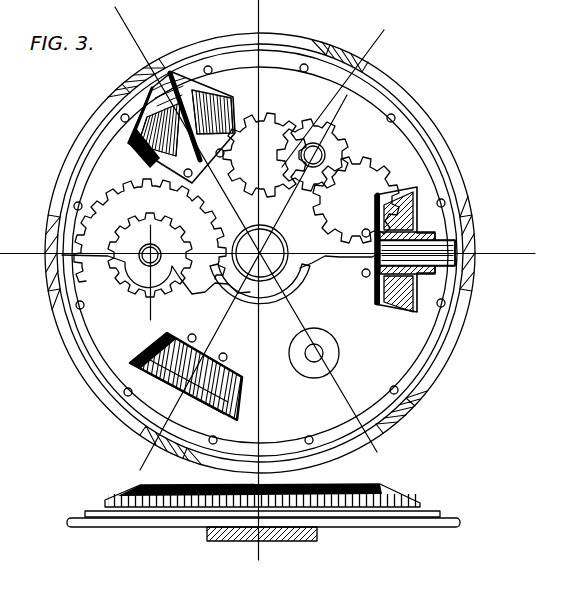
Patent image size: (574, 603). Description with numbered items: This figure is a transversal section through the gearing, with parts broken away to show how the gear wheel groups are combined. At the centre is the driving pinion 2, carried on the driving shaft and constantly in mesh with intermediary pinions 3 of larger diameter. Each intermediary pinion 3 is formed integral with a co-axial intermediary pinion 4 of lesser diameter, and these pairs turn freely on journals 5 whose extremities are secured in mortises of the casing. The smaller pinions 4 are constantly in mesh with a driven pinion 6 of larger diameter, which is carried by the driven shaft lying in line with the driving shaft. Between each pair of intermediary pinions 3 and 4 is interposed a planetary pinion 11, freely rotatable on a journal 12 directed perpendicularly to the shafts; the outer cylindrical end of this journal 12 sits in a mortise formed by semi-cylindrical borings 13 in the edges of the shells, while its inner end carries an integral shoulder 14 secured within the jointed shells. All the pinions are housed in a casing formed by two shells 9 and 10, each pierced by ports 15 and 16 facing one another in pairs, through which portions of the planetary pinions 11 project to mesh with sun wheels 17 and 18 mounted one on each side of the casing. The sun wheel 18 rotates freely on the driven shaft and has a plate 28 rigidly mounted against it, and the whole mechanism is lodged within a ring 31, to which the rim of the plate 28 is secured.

The driving pinion 2 is at (298, 280).
The intermediary pinion 3 is at (360, 162).
The intermediary pinion 4 is at (322, 160).
The journal 5 is at (327, 352).
The driven pinion 6 is at (316, 240).
The shell 9 is at (413, 140).
The shell 10 is at (427, 347).
The planetary pinion 11 is at (140, 373).
The journal 12 is at (468, 272).
The semi-cylindrical boring 13 is at (170, 78).
The shoulder 14 is at (385, 233).
The port 15 is at (235, 420).
The port 16 is at (212, 88).
The sun wheel 17 is at (240, 117).
The sun wheel 18 is at (355, 500).
The plate 28 is at (423, 518).
The ring 31 is at (388, 84).